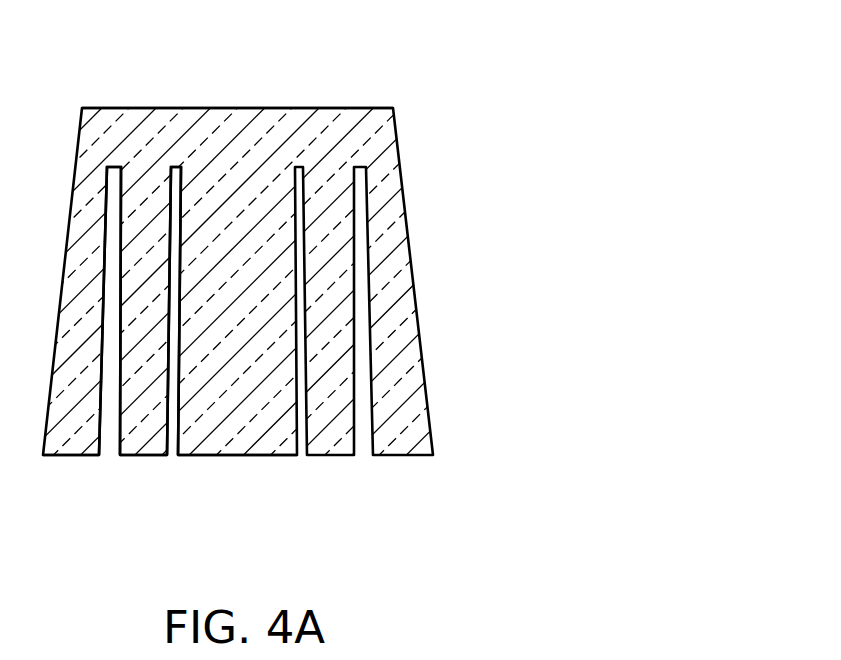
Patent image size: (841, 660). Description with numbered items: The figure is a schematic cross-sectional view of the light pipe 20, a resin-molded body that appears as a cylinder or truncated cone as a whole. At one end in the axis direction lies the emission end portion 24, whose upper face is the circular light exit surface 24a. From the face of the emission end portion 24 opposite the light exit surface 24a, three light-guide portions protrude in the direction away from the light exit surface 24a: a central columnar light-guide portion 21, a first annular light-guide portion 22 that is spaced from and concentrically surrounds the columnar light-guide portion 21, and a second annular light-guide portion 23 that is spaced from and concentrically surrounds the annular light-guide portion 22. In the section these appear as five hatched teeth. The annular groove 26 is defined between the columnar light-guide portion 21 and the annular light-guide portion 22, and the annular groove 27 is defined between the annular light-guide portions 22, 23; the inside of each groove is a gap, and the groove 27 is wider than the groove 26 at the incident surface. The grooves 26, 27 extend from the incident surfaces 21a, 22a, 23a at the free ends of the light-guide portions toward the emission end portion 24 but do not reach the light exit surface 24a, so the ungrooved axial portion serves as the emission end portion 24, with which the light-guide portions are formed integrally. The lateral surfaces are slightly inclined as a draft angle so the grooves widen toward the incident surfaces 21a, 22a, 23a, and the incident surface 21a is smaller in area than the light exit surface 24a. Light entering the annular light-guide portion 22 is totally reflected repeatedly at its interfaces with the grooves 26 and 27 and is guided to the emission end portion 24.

The light pipe 20 is at (447, 72).
The columnar light-guide portion 21 is at (260, 423).
The incident surface 21a is at (212, 455).
The annular light-guide portion 22 is at (330, 423).
The incident surface 22a is at (142, 455).
The annular light-guide portion 23 is at (403, 423).
The incident surface 23a is at (75, 455).
The emission end portion 24 is at (408, 108).
The light exit surface 24a is at (243, 108).
The groove 26 is at (173, 422).
The groove 27 is at (110, 422).